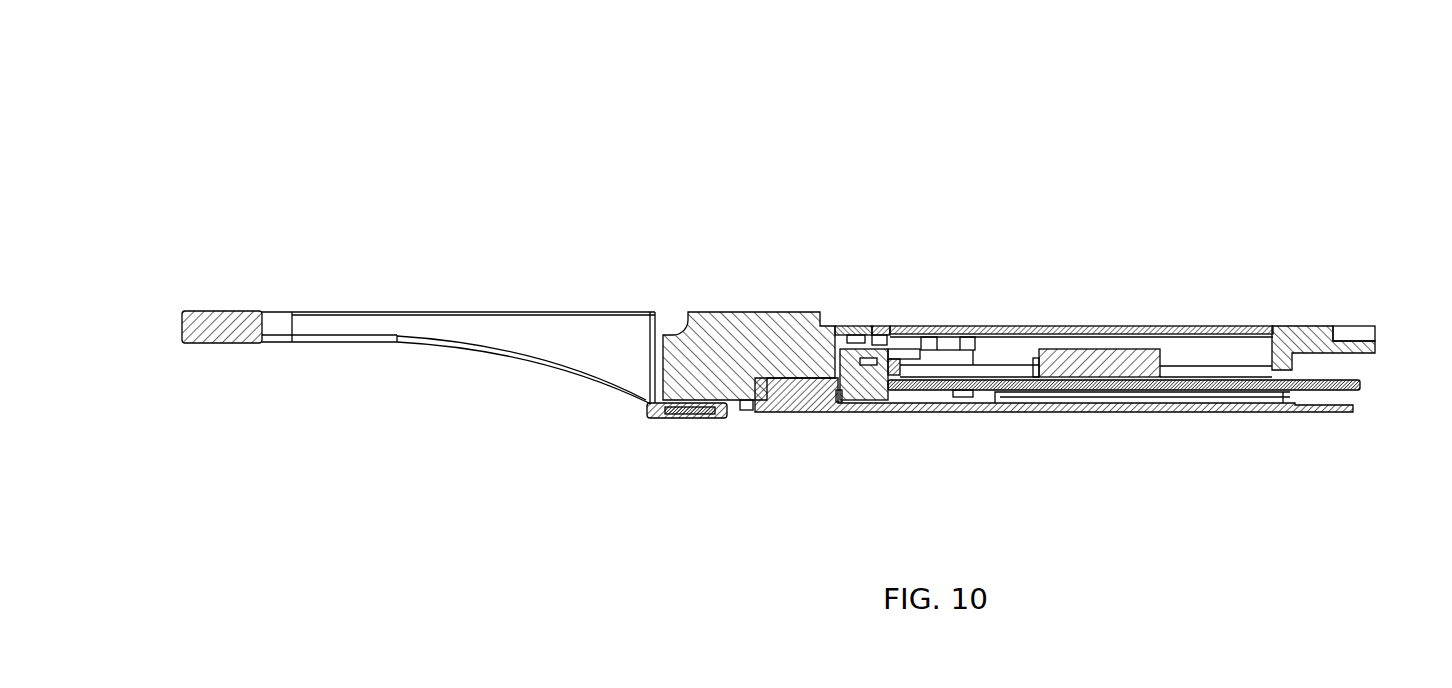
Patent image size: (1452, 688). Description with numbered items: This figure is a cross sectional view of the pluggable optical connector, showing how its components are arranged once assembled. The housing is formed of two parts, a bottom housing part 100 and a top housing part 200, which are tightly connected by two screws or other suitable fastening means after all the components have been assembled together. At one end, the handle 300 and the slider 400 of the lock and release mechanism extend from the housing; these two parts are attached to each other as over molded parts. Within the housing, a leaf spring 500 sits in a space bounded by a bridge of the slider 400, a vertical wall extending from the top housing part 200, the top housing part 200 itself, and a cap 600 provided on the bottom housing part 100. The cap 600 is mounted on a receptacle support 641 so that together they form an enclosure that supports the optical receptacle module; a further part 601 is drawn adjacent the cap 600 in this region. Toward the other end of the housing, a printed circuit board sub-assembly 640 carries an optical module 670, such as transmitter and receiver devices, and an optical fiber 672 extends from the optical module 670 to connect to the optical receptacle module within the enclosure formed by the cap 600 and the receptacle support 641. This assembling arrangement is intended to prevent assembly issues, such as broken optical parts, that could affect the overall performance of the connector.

The bottom housing part 100 is at (1054, 450).
The top housing part 200 is at (709, 291).
The handle 300 is at (415, 306).
The slider 400 is at (1081, 241).
The leaf spring 500 is at (780, 228).
The cap 600 is at (924, 436).
The insert piece 601 is at (826, 192).
The printed circuit board sub-assembly 640 is at (1344, 266).
The receptacle support 641 is at (767, 459).
The optical module 670 is at (1152, 288).
The optical fiber 672 is at (1124, 252).